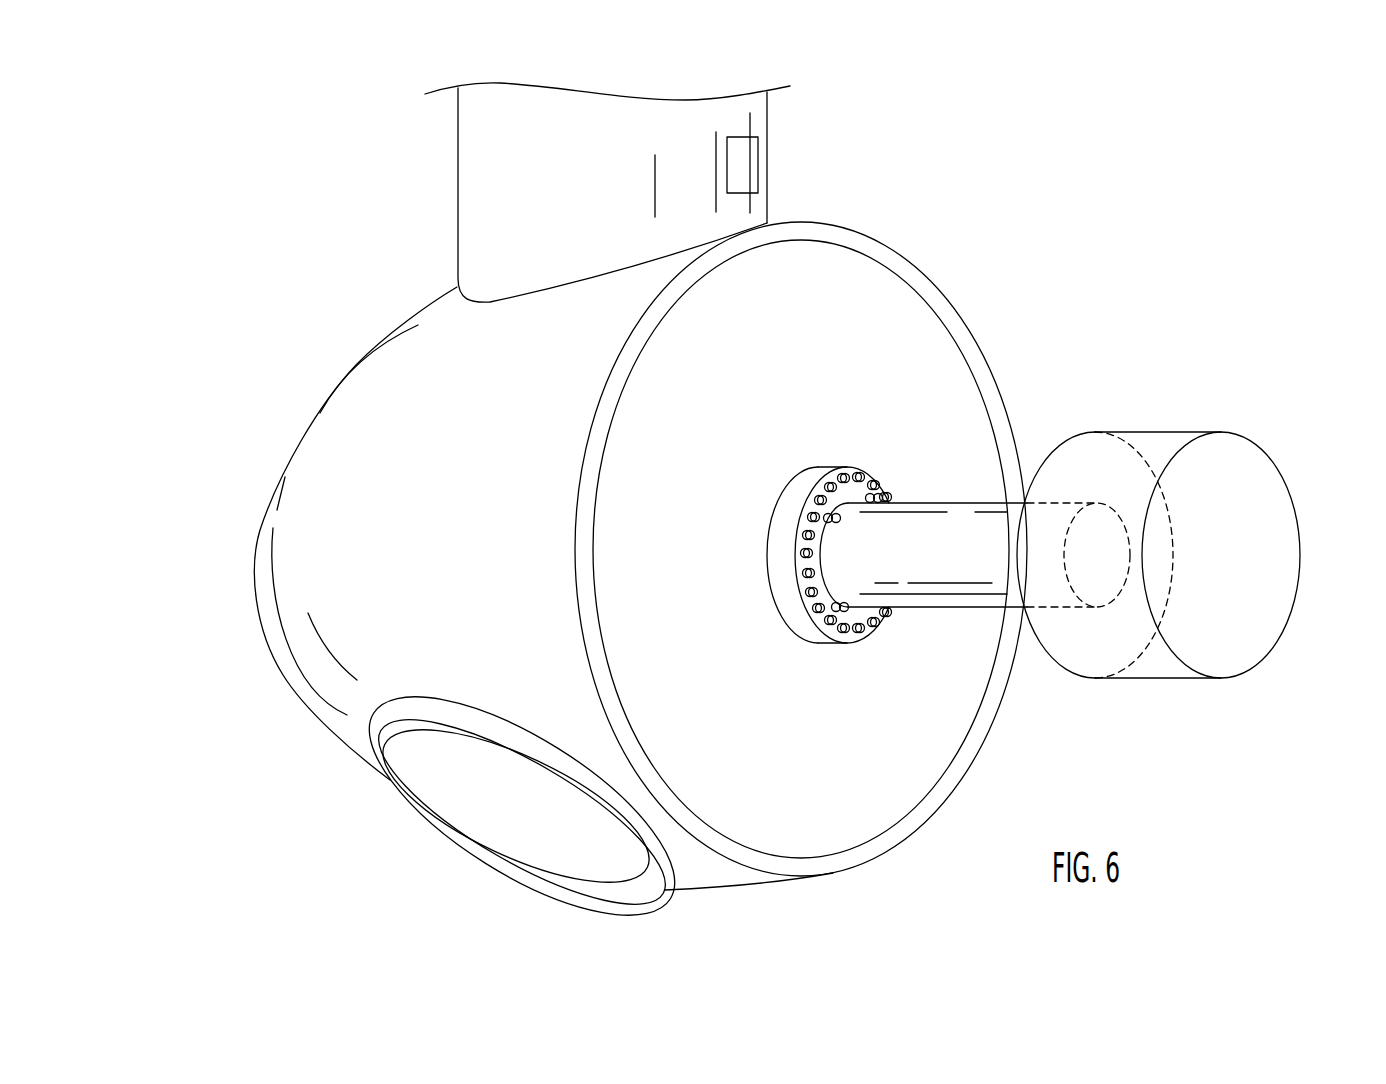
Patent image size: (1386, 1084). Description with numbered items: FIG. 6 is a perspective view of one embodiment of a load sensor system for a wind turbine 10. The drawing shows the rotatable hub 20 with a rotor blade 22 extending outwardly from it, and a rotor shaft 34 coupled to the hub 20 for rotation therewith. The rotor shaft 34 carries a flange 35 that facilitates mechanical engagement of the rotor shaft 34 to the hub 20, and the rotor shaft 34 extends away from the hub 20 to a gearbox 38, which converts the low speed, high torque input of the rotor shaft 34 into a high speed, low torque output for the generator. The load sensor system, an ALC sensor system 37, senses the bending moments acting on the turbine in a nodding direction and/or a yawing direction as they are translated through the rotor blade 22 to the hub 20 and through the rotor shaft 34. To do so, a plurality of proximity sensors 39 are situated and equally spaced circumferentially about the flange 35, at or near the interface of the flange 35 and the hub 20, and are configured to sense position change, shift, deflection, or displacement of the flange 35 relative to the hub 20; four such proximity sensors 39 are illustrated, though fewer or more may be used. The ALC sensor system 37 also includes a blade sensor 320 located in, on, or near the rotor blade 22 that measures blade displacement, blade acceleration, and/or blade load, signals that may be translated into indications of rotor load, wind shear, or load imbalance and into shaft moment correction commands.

The wind turbine 10 is at (1112, 240).
The hub 20 is at (315, 284).
The rotor blade 22 is at (484, 181).
The ALC sensor system 37 is at (845, 132).
The blade sensor 320 is at (750, 167).
The rotor shaft 34 is at (963, 508).
The flange 35 is at (780, 555).
The gearbox 38 is at (1158, 667).
The proximity sensor 39 is at (827, 505).